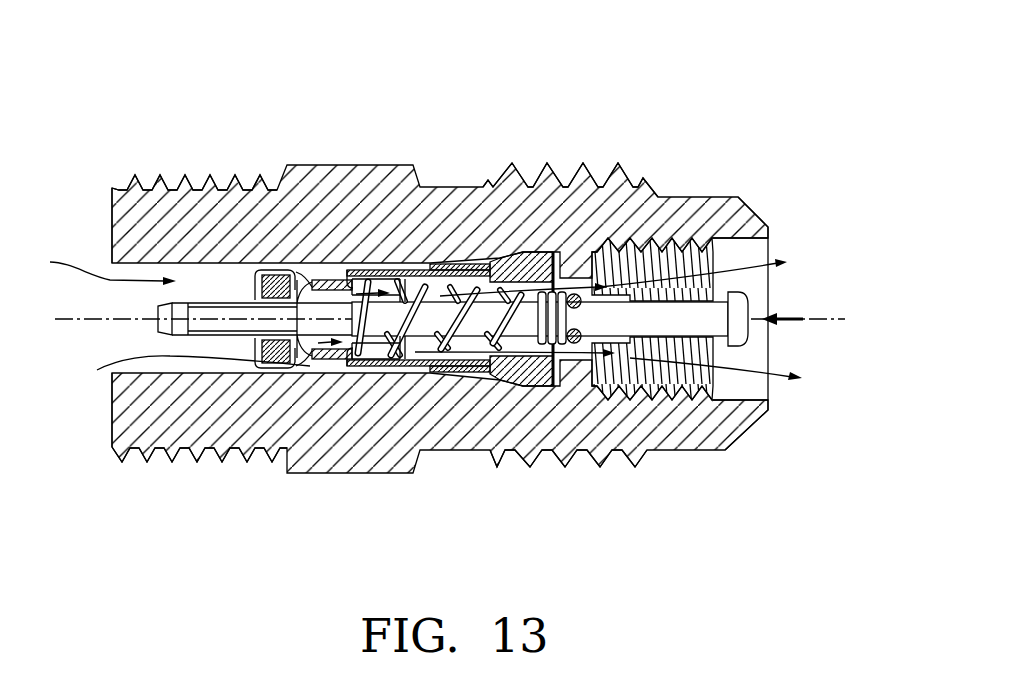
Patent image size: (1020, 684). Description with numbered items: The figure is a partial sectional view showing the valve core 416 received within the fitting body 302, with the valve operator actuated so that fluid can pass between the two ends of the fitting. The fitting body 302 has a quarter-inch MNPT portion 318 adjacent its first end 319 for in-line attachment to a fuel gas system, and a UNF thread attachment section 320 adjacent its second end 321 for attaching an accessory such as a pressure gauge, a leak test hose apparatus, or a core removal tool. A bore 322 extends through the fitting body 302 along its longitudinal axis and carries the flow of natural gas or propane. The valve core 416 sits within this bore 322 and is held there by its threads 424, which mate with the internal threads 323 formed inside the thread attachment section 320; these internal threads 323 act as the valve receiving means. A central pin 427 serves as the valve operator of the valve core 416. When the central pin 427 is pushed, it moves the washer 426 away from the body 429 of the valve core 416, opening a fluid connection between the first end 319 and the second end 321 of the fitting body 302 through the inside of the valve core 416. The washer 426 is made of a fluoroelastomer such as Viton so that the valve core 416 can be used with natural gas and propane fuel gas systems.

The fitting body 302 is at (373, 165).
The ¼ inch MNPT portion 318 is at (198, 462).
The first end 319 is at (110, 428).
The 7/16-20 UNF thread attachment section 320 is at (618, 165).
The second end 321 is at (768, 403).
The bore 322 is at (788, 280).
The threads 323 is at (688, 252).
The valve core 416 is at (380, 367).
The threads 424 is at (545, 383).
The washer 426 is at (273, 277).
The central pin 427 is at (748, 312).
The body 429 is at (333, 280).